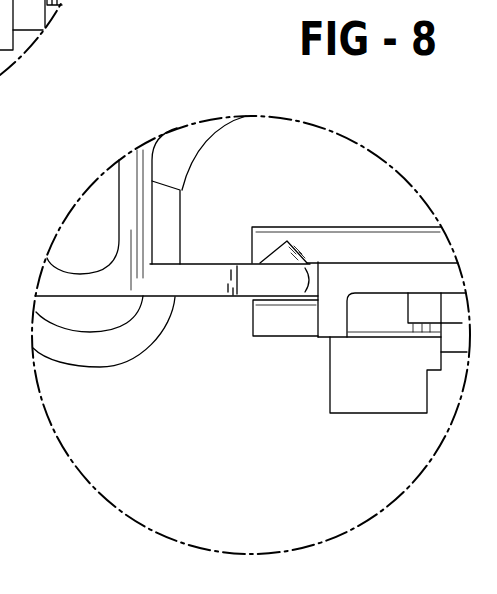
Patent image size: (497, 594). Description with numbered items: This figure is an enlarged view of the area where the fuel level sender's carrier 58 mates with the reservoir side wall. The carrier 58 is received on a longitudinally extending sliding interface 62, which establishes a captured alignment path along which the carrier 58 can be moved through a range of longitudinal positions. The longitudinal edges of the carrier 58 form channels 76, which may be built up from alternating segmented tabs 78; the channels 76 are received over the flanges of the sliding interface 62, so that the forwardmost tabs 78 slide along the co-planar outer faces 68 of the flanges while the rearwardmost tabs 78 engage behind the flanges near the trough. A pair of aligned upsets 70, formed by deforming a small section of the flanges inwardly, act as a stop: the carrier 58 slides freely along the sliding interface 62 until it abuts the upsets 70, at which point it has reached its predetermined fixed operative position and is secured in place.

The carrier 58 is at (387, 227).
The sliding interface 62 is at (276, 284).
The outer face 68 is at (202, 298).
The upsets 70 is at (307, 262).
The channels 76 is at (309, 262).
The segmented tabs 78 is at (252, 244).